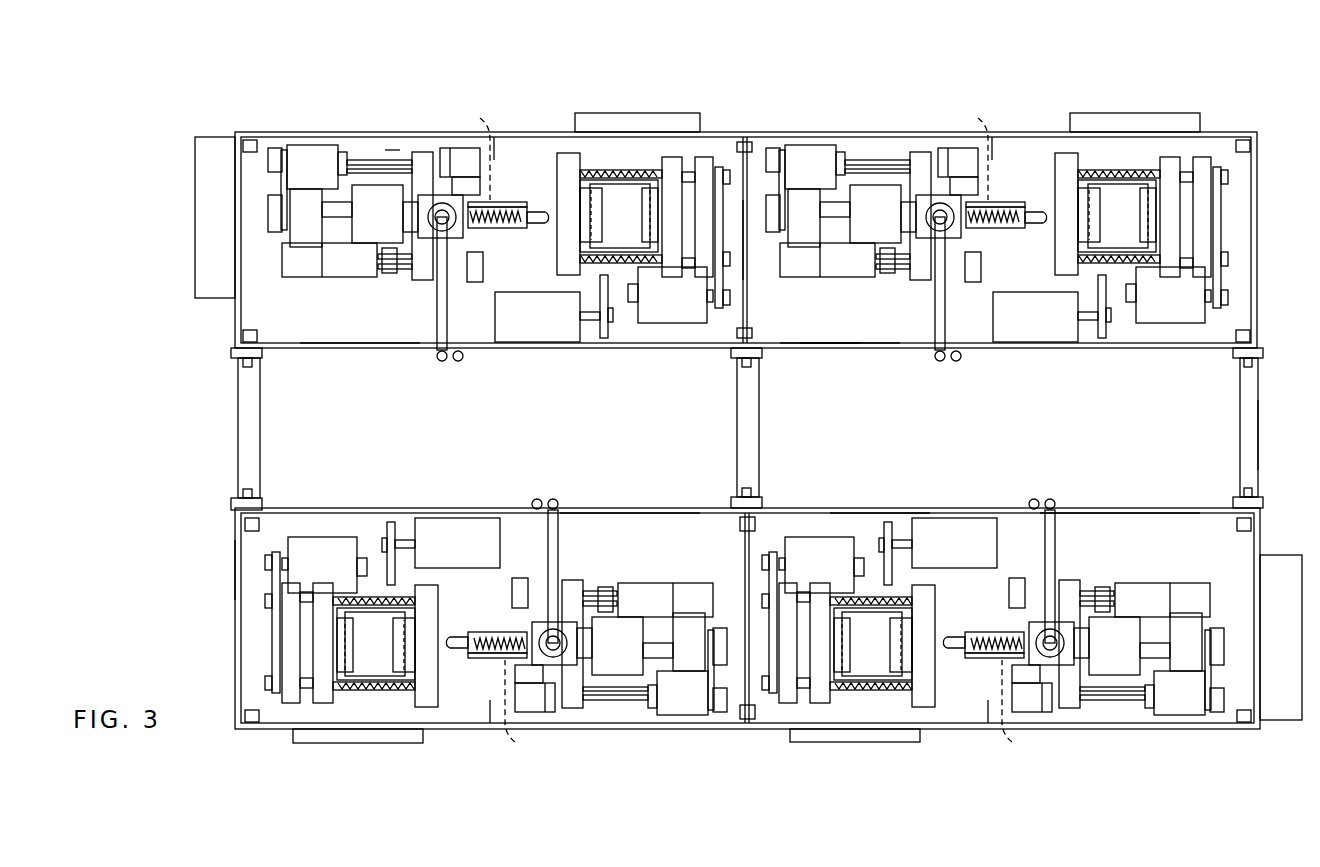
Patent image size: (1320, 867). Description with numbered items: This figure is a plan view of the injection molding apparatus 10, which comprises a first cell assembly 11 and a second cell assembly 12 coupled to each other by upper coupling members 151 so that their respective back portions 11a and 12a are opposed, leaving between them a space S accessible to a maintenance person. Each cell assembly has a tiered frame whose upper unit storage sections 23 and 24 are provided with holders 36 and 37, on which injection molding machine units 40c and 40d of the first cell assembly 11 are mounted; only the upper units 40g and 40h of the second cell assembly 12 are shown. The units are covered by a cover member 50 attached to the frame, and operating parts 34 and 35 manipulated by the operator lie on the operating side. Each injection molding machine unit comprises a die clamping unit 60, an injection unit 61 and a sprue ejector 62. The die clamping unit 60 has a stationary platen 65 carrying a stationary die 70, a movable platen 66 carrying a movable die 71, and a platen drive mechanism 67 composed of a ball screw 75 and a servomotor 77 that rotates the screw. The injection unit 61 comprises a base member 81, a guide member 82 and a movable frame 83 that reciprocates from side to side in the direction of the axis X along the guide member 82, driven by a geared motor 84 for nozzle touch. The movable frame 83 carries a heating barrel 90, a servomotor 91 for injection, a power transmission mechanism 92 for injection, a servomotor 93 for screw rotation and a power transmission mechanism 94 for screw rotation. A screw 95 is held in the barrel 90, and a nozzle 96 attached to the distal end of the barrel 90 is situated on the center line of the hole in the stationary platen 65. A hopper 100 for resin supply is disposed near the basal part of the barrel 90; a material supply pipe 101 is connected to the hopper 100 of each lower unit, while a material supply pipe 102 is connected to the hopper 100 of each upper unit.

The injection molding apparatus 10 is at (800, 110).
The first cell assembly 11 is at (1216, 728).
The back portion 11a is at (878, 508).
The second cell assembly 12 is at (1267, 130).
The back portion 12a is at (855, 350).
The upper unit storage section 23 is at (362, 343).
The upper unit storage section 24 is at (820, 343).
The operating part 34 is at (625, 113).
The operating part 35 is at (1135, 113).
The holder 36 is at (1080, 530).
The holder 37 is at (580, 527).
The injection molding machine unit 40c is at (968, 718).
The injection molding machine unit 40d is at (470, 718).
The injection molding machine unit 40g is at (495, 137).
The injection molding machine unit 40h is at (994, 137).
The cover member 50 is at (237, 566).
The die clamping unit 60 is at (705, 157).
The injection unit 61 is at (392, 152).
The sprue ejector 62 is at (550, 342).
The stationary platen 65 is at (567, 153).
The movable platen 66 is at (672, 157).
The platen drive mechanism 67 is at (722, 230).
The stationary die 70 is at (600, 185).
The movable die 71 is at (640, 175).
The ball screw 75 is at (610, 252).
The servomotor 77 is at (672, 323).
The base member 81 is at (447, 148).
The guide member 82 is at (365, 165).
The movable frame 83 is at (421, 154).
The geared motor 84 is at (500, 204).
The heating barrel 90 is at (510, 228).
The servomotor for injection 91 is at (312, 160).
The power transmission mechanism for injection 92 is at (275, 148).
The servomotor for screw rotation 93 is at (340, 272).
The power transmission mechanism for screw rotation 94 is at (388, 272).
The screw 95 is at (482, 126).
The nozzle 96 is at (537, 213).
The hopper 100 is at (462, 225).
The material supply pipe 101 is at (462, 360).
The material supply pipe 102 is at (440, 360).
The upper coupling member 151 is at (260, 442).
The space S is at (1257, 418).
The axis X is at (712, 430).